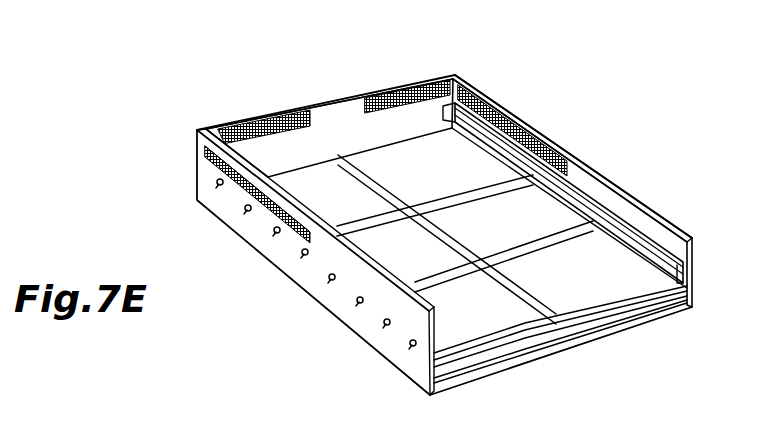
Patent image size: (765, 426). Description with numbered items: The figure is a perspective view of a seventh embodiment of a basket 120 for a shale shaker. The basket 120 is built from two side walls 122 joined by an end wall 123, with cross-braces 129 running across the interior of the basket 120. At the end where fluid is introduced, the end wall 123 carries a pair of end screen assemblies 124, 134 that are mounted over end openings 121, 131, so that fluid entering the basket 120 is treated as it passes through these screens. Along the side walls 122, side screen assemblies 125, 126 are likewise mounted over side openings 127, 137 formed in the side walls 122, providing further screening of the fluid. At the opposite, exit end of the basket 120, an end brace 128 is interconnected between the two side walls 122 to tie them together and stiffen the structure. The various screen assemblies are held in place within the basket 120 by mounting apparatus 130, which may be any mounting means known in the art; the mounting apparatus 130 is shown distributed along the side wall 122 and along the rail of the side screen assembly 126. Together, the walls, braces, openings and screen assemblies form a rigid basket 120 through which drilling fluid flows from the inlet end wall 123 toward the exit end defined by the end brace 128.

The basket 120 is at (618, 170).
The end opening 121 is at (222, 126).
The side wall 122 is at (645, 222).
The end wall 123 is at (328, 128).
The end screen assembly 124 is at (250, 130).
The side screen assembly 125 is at (212, 168).
The side screen assembly 126 is at (495, 108).
The side opening 127 is at (272, 208).
The end brace 128 is at (612, 317).
The cross-brace 129 is at (368, 178).
The mounting apparatus 130 is at (576, 168).
The end opening 131 is at (443, 82).
The end screen assembly 134 is at (403, 88).
The side opening 137 is at (528, 131).